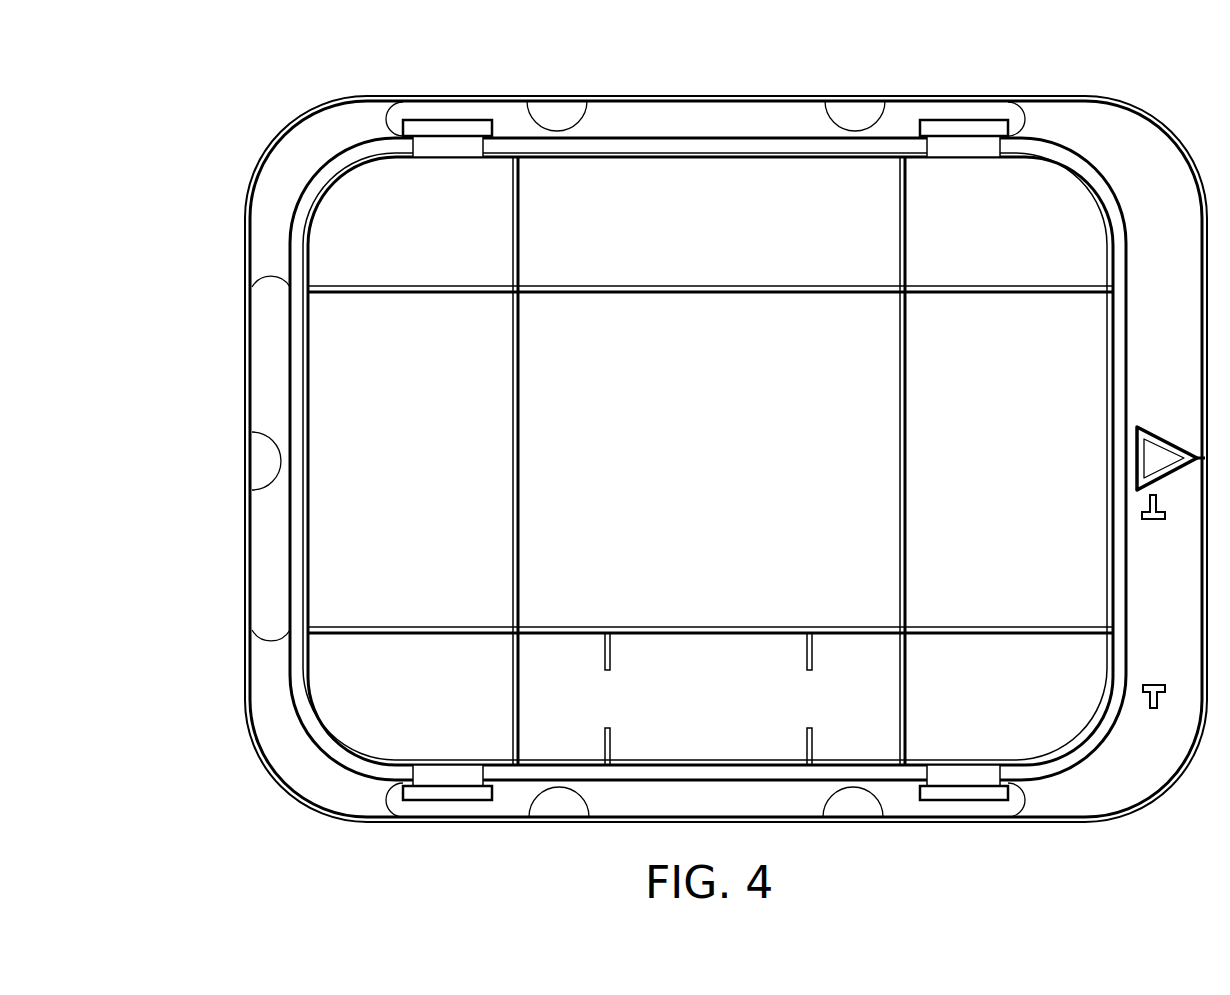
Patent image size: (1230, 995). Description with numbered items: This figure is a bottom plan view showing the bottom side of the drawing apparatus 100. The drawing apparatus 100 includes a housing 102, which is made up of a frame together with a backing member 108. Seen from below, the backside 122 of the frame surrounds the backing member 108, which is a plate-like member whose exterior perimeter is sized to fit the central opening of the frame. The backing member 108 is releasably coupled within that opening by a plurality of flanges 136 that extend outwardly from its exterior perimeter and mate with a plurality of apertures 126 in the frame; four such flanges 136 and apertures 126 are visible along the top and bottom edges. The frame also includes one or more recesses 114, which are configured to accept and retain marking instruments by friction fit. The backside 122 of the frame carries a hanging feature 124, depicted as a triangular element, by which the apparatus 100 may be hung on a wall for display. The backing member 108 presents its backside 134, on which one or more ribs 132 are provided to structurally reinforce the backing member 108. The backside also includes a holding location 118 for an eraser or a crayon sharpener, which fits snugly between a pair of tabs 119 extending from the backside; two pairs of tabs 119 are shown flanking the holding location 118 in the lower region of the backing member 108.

The drawing apparatus 100 is at (138, 152).
The housing 102 is at (244, 520).
The backing member 108 is at (1058, 713).
The recess 114 is at (652, 115).
The holding location 118 is at (726, 698).
The tabs 119 is at (605, 652).
The backside of the frame 122 is at (1187, 341).
The hanging feature 124 is at (1135, 457).
The apertures 126 is at (432, 127).
The ribs 132 is at (720, 290).
The backside of the backing member 134 is at (740, 458).
The flanges 136 is at (446, 158).